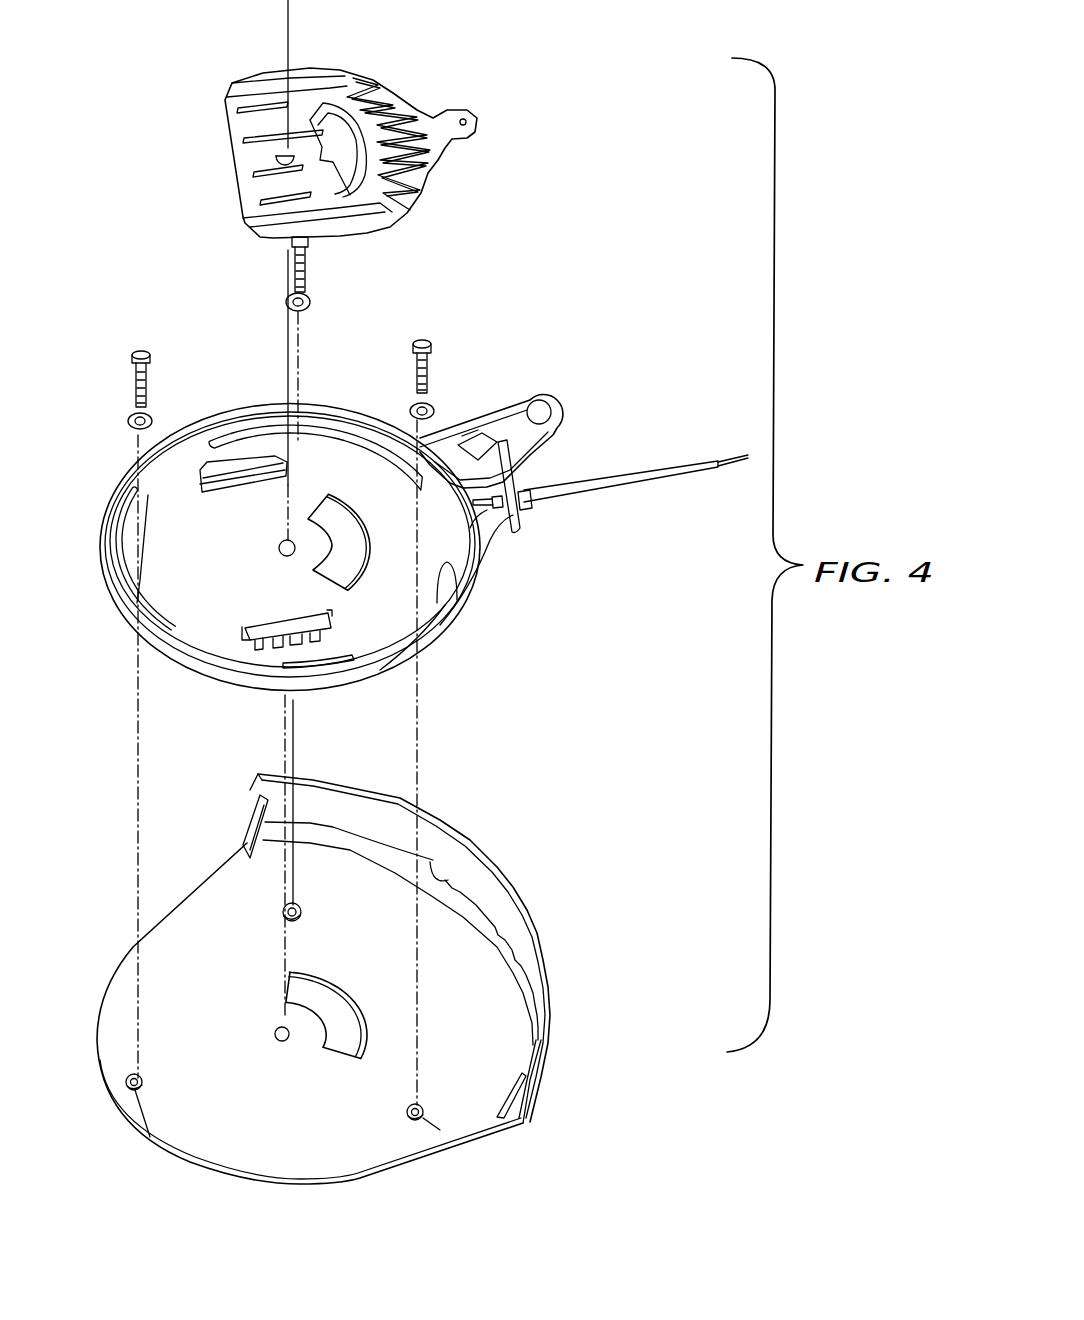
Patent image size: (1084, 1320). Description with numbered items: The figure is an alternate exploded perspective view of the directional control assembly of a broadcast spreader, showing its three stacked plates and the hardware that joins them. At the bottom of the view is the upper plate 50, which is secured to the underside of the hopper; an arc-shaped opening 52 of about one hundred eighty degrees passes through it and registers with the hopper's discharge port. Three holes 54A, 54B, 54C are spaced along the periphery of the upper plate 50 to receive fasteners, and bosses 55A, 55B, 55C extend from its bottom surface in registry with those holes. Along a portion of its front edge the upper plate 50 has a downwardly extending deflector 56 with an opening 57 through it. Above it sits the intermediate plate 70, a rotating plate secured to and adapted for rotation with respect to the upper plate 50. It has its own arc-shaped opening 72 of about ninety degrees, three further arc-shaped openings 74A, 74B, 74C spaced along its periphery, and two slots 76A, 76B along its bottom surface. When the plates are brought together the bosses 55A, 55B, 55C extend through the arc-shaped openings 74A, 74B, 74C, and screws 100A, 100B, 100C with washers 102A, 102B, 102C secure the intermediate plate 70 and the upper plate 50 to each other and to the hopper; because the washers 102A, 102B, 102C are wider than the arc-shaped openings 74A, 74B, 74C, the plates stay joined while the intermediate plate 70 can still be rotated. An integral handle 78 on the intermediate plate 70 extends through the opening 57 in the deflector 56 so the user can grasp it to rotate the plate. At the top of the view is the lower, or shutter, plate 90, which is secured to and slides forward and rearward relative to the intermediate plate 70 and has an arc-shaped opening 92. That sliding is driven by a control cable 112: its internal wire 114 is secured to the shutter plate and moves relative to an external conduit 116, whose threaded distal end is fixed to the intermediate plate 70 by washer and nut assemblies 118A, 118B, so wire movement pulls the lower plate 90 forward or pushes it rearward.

The upper plate 50 is at (120, 988).
The arc-shaped opening 52 is at (337, 1057).
The hole 54A is at (284, 913).
The hole 54B is at (130, 1083).
The hole 54C is at (413, 1120).
The boss 55A is at (290, 905).
The boss 55B is at (137, 1090).
The boss 55C is at (425, 1110).
The deflector 56 is at (513, 878).
The opening 57 is at (450, 883).
The intermediate plate 70 is at (262, 403).
The arc-shaped opening 72 is at (355, 577).
The arc-shaped opening 74A is at (258, 430).
The arc-shaped opening 74B is at (148, 618).
The arc-shaped opening 74C is at (433, 600).
The slot 76A is at (287, 460).
The slot 76B is at (245, 632).
The integral handle 78 is at (547, 397).
The lower plate 90 is at (407, 93).
The arc-shaped opening 92 is at (357, 170).
The screw 100A is at (305, 267).
The screw 100B is at (133, 357).
The screw 100C is at (427, 345).
The washer 102A is at (310, 303).
The washer 102B is at (152, 420).
The washer 102C is at (435, 408).
The control cable 112 is at (662, 470).
The internal wire 114 is at (510, 475).
The external conduit 116 is at (575, 490).
The washer and nut assembly 118A is at (530, 510).
The washer and nut assembly 118B is at (513, 533).